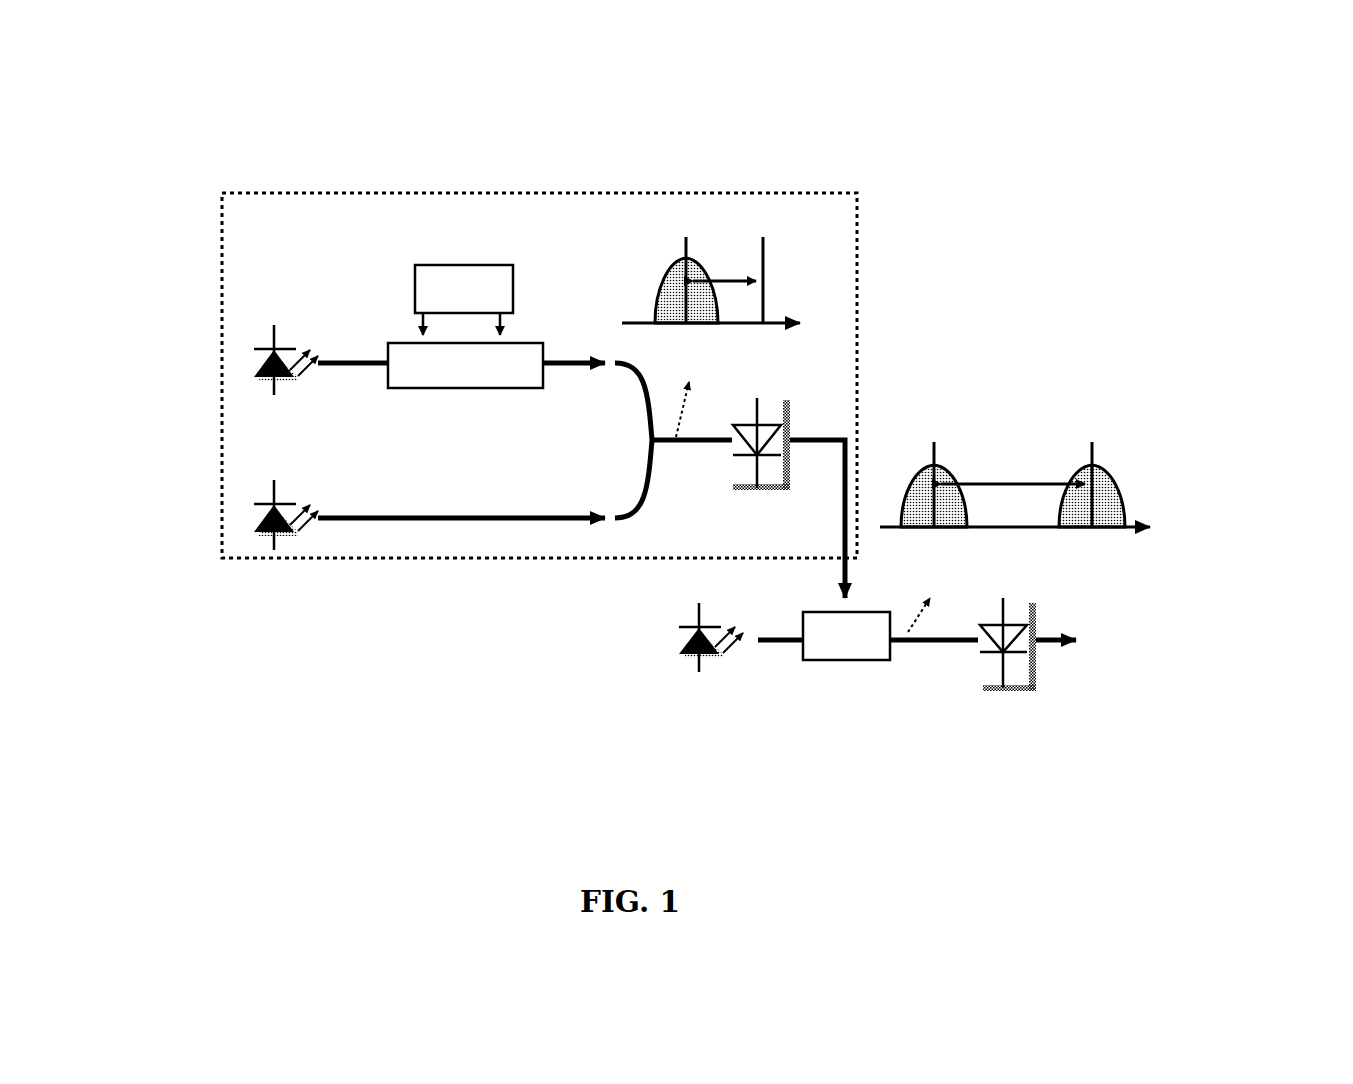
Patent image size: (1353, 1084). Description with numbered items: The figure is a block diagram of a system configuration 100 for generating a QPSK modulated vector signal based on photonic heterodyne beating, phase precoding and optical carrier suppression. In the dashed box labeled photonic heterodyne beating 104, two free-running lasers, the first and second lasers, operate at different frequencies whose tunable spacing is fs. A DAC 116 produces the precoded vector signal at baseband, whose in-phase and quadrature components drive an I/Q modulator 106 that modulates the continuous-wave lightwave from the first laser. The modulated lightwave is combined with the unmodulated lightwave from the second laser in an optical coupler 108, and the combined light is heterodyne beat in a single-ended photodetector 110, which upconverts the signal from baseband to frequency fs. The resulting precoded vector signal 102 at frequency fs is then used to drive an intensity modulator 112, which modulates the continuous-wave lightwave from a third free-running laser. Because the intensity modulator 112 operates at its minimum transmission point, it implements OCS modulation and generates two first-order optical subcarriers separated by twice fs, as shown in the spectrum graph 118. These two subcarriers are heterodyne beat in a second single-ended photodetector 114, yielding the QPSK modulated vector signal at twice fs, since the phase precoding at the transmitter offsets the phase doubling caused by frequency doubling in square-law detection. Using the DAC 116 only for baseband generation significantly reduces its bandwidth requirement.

The system configuration 100 is at (905, 110).
The precoded vector signal 102 is at (494, 598).
The photonic heterodyne beating 104 is at (252, 195).
The I/Q modulator 106 is at (462, 388).
The optical coupler 108 is at (602, 451).
The photodetector 110 is at (765, 403).
The intensity modulator 112 is at (857, 662).
The photodetector 114 is at (1007, 730).
The DAC 116 is at (540, 298).
The spectrum graph 118 is at (1128, 457).